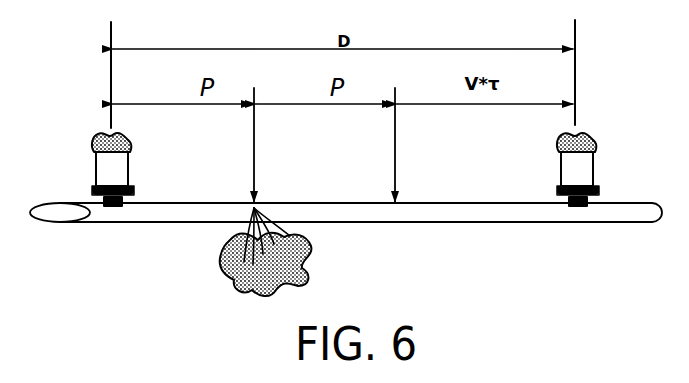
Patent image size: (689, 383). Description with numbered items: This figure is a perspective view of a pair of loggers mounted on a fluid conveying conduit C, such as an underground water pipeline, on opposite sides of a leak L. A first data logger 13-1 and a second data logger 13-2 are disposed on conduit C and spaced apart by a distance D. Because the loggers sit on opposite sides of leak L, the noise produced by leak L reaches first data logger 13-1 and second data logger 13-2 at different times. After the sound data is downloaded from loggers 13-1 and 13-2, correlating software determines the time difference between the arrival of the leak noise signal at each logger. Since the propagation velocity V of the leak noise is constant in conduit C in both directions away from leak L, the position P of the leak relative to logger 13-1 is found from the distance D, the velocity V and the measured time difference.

The first CP logger 13-1 is at (129, 170).
The second CP logger 13-2 is at (594, 172).
The fluid conveying conduit C is at (382, 222).
The leak L is at (254, 208).